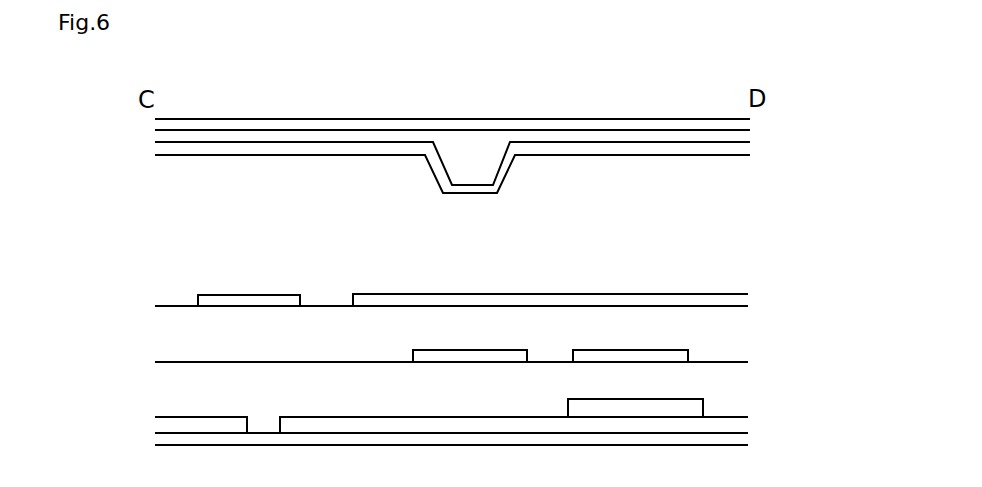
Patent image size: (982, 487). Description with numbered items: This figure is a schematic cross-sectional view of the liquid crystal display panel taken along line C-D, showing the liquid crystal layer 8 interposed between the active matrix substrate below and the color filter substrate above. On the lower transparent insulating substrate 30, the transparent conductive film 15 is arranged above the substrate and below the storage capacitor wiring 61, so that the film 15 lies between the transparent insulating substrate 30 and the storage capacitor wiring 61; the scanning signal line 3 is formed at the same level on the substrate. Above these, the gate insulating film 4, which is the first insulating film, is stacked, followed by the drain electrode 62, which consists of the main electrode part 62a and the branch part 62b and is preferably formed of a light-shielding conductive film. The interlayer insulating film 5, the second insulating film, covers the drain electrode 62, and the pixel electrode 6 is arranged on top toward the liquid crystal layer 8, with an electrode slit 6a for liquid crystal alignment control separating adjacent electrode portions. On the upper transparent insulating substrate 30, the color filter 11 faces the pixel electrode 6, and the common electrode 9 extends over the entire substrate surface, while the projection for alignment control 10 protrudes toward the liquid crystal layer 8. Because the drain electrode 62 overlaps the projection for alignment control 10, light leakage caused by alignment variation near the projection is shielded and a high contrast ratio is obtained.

The transparent insulating substrate 30 is at (744, 127).
The color filter 11 is at (740, 136).
The common electrode 9 is at (745, 150).
The projection for alignment control 10 is at (477, 158).
The liquid crystal layer 8 is at (737, 247).
The pixel electrode 6 is at (198, 299).
The electrode slit 6a is at (323, 298).
The interlayer insulating film 5 is at (163, 332).
The drain electrode 62 is at (644, 331).
The branch part 62b is at (525, 352).
The main electrode part 62a is at (688, 357).
The gate insulating film 4 is at (163, 387).
The scanning signal line 3 is at (163, 423).
The storage capacitor wiring 61 is at (673, 407).
The transparent conductive film 15 is at (740, 424).